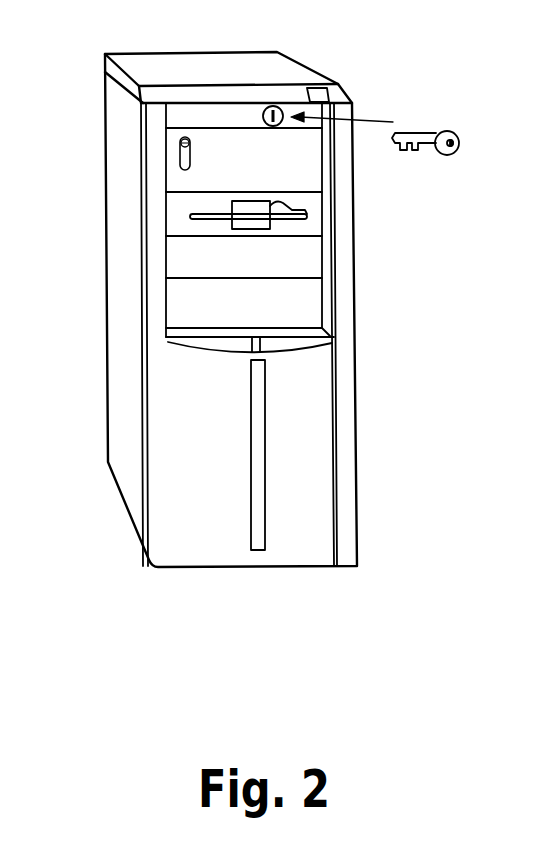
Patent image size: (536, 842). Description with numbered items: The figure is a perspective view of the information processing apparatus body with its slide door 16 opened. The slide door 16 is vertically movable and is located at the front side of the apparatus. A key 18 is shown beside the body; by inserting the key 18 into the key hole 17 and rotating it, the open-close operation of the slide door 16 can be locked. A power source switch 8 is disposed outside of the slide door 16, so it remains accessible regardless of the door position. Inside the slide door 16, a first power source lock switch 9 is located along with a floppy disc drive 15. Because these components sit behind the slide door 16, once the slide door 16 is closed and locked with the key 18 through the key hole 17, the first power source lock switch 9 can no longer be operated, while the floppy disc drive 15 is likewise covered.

The power source switch 8 is at (323, 93).
The first power source lock switch 9 is at (180, 147).
The floppy disc drive 15 is at (308, 224).
The slide door 16 is at (315, 348).
The key lock 17 is at (281, 109).
The key 18 is at (442, 155).